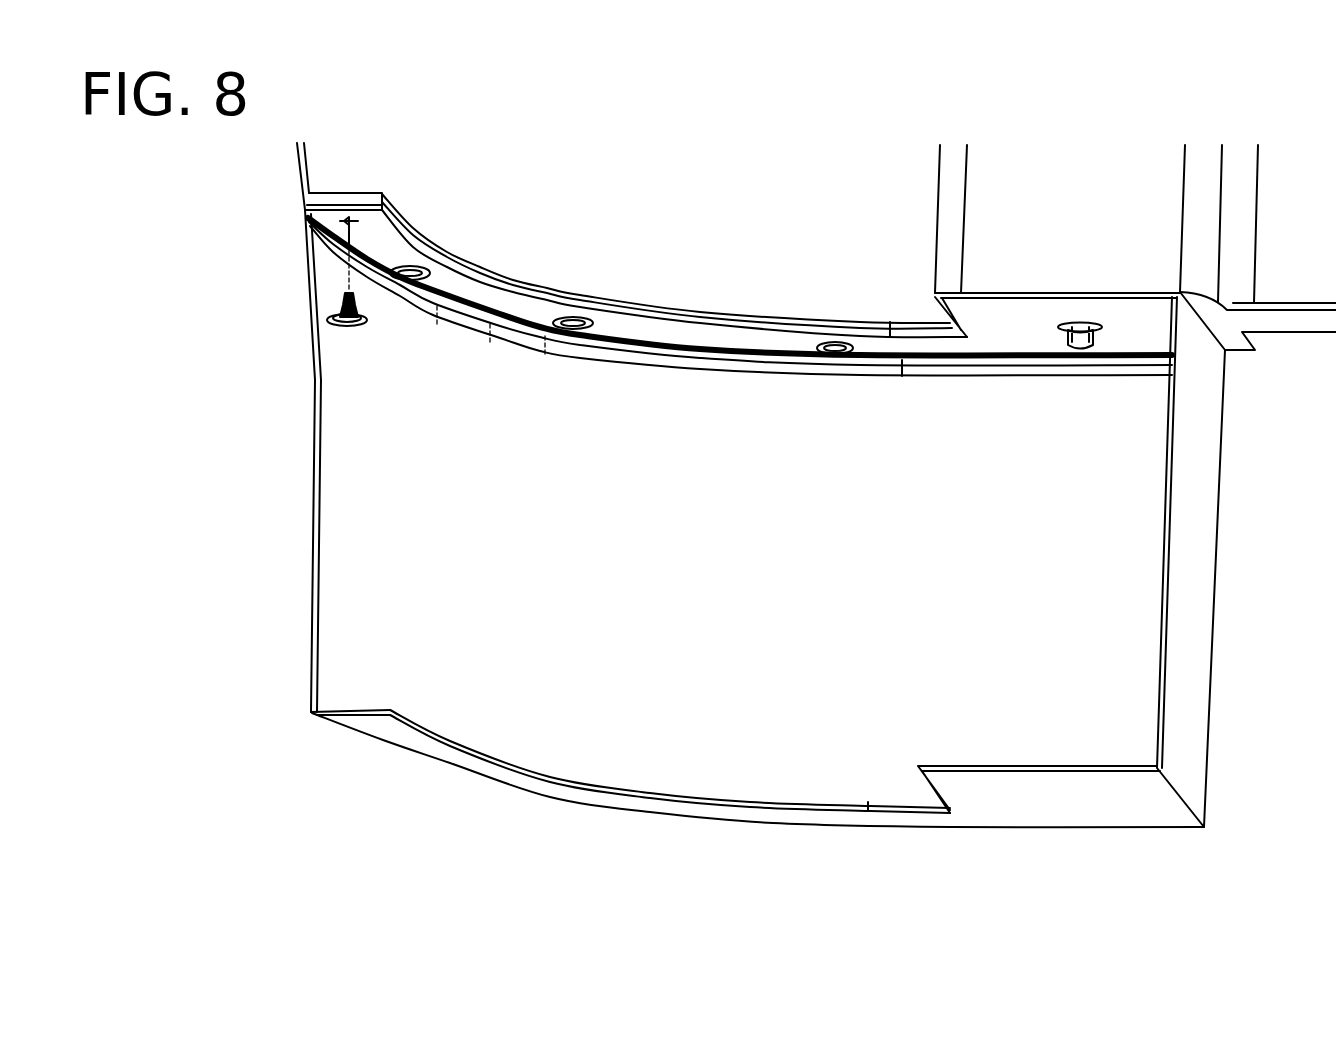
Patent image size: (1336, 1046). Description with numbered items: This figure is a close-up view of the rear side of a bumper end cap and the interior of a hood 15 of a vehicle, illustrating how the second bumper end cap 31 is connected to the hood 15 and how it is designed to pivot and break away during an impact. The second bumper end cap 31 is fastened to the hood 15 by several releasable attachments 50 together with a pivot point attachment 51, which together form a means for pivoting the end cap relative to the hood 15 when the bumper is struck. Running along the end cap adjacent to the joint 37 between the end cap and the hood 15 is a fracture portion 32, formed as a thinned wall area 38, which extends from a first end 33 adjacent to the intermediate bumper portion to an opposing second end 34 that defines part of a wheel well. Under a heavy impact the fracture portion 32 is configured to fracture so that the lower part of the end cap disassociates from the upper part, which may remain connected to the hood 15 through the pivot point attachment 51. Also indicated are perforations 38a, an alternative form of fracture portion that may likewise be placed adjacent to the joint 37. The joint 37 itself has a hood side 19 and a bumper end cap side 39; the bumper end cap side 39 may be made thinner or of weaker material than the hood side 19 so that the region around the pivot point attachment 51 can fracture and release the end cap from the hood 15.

The hood 15 is at (1013, 178).
The hood side of the joint 19 is at (343, 193).
The second bumper end cap 31 is at (388, 607).
The fracture portion 32 is at (413, 300).
The first end 33 is at (1213, 420).
The second end 34 is at (320, 405).
The joint 37 is at (305, 205).
The thinned wall area 38 is at (306, 228).
The perforations 38a is at (508, 340).
The bumper end cap side of the joint 39 is at (375, 233).
The releasable attachment 50 is at (425, 270).
The pivot point attachment 51 is at (1080, 352).